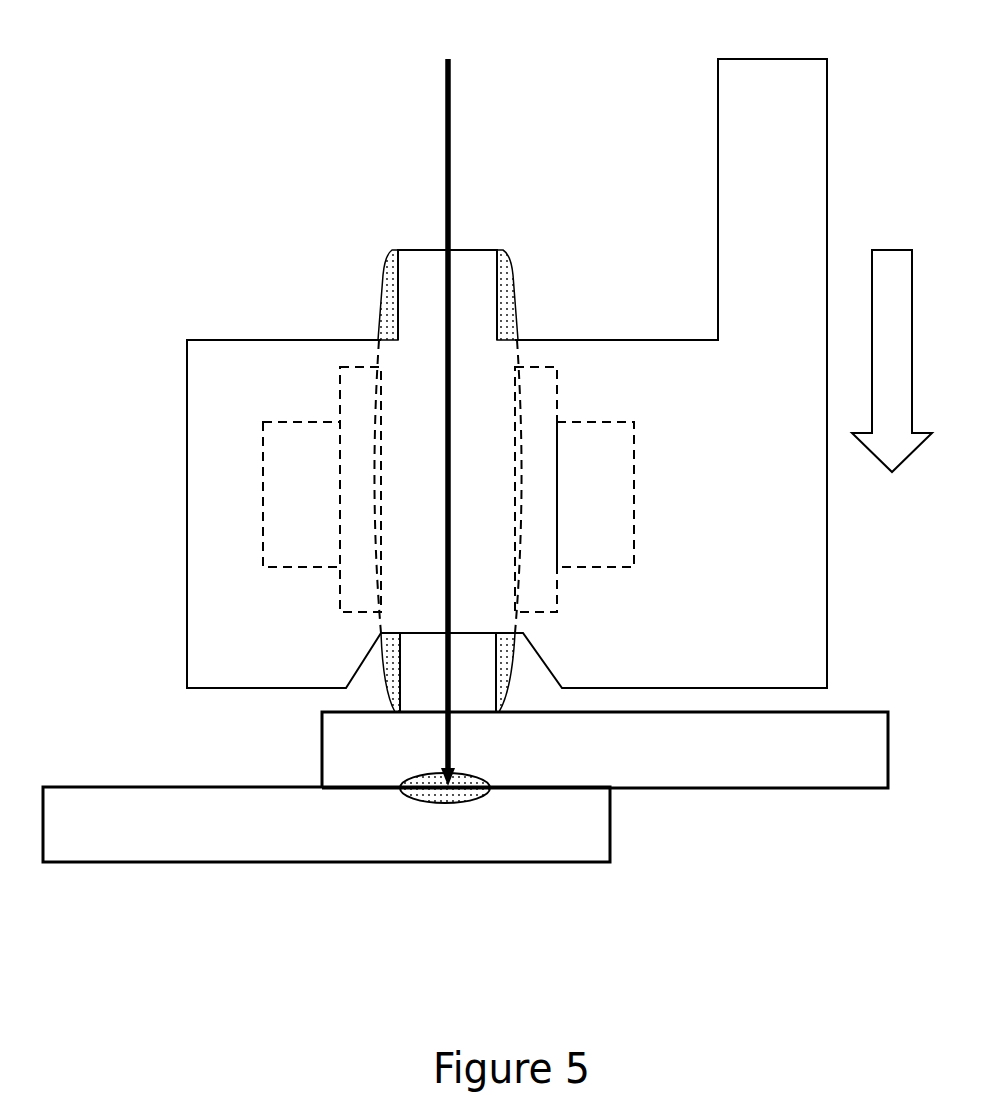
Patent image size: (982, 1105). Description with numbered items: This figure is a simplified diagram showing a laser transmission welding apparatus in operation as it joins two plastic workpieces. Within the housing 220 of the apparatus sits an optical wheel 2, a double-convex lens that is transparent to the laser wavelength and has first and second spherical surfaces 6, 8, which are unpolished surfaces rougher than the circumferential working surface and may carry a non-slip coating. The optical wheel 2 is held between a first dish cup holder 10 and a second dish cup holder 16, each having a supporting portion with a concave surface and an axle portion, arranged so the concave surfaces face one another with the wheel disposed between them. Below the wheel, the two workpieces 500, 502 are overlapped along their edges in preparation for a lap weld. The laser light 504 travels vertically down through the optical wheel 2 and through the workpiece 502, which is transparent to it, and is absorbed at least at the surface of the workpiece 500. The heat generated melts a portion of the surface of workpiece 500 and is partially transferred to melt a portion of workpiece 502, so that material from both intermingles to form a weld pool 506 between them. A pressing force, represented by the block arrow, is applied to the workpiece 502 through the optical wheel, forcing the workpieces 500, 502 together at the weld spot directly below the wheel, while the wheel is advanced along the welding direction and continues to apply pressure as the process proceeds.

The optical wheel 2 is at (290, 190).
The first spherical surface 6 is at (388, 305).
The second spherical surface 8 is at (507, 302).
The first dish cup holder 10 is at (347, 366).
The second dish cup holder 16 is at (549, 365).
The housing 220 is at (208, 338).
The workpiece 500 is at (247, 827).
The workpiece 502 is at (664, 765).
The laser light 504 is at (450, 138).
The weld pool 506 is at (437, 795).